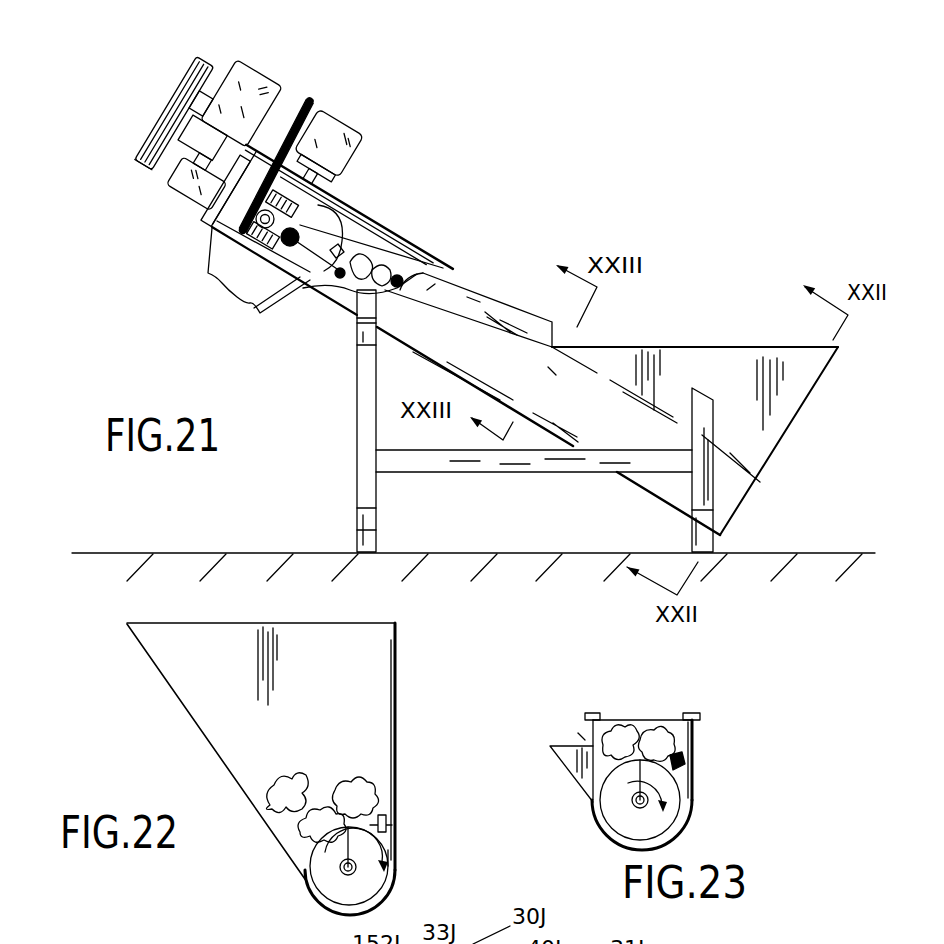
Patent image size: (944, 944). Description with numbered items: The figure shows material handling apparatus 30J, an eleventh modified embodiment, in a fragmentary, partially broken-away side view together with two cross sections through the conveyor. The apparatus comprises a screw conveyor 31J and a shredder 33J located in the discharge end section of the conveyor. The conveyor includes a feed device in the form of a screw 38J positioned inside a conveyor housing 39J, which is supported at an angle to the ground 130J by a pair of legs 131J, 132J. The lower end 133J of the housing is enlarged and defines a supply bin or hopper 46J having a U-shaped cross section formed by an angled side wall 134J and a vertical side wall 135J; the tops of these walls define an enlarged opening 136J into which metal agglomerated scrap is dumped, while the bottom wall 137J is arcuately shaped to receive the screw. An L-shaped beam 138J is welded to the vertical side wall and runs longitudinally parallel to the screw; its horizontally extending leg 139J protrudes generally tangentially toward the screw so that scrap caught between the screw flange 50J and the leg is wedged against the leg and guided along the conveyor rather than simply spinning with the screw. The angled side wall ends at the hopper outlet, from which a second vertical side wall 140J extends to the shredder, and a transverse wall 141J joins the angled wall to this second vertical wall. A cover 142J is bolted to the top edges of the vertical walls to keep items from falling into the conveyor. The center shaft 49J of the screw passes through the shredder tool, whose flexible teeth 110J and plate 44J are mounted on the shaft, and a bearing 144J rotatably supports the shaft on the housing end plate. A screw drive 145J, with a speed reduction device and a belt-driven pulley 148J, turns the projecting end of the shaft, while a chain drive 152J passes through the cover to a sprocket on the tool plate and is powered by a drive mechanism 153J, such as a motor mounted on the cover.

In FIG. 21, the material handling apparatus 30J is at (458, 90).
In FIG. 22, the material handling apparatus 30J is at (424, 644).
In FIG. 23, the material handling apparatus 30J is at (752, 684).
In FIG. 21, the screw conveyor 31J is at (492, 266).
In FIG. 22, the screw conveyor 31J is at (296, 784).
In FIG. 23, the screw conveyor 31J is at (633, 731).
In FIG. 21, the shredder 33J is at (214, 243).
In FIG. 21, the screw 38J is at (380, 293).
In FIG. 22, the screw 38J is at (325, 878).
In FIG. 23, the screw 38J is at (625, 823).
In FIG. 21, the conveyor housing 39J is at (345, 290).
In FIG. 21, the plate 44J is at (257, 275).
In FIG. 21, the hopper 46J is at (698, 345).
In FIG. 22, the hopper 46J is at (400, 729).
In FIG. 22, the center shaft 49J is at (345, 866).
In FIG. 23, the center shaft 49J is at (634, 801).
In FIG. 22, the screw flange 50J is at (358, 899).
In FIG. 23, the screw flange 50J is at (660, 837).
In FIG. 21, the flexible teeth 110J is at (292, 214).
In FIG. 21, the ground 130J is at (198, 552).
In FIG. 21, the leg 131J is at (358, 489).
In FIG. 21, the leg 132J is at (705, 470).
In FIG. 21, the lower end 133J is at (642, 488).
In FIG. 21, the angled side wall 134J is at (600, 363).
In FIG. 22, the angled side wall 134J is at (190, 718).
In FIG. 23, the angled side wall 134J is at (568, 777).
In FIG. 22, the vertical side wall 135J is at (396, 679).
In FIG. 23, the vertical side wall 135J is at (693, 732).
In FIG. 21, the enlarged opening 136J is at (748, 347).
In FIG. 22, the enlarged opening 136J is at (195, 640).
In FIG. 22, the bottom wall 137J is at (327, 912).
In FIG. 21, the L-shaped beam 138J is at (335, 258).
In FIG. 22, the L-shaped beam 138J is at (392, 824).
In FIG. 23, the L-shaped beam 138J is at (688, 755).
In FIG. 22, the horizontally extending leg 139J is at (388, 857).
In FIG. 23, the horizontally extending leg 139J is at (694, 784).
In FIG. 21, the second vertical side wall 140J is at (553, 349).
In FIG. 23, the second vertical side wall 140J is at (593, 732).
In FIG. 21, the transverse wall 141J is at (548, 367).
In FIG. 23, the transverse wall 141J is at (578, 733).
In FIG. 21, the cover 142J is at (428, 290).
In FIG. 23, the cover 142J is at (612, 720).
In FIG. 21, the bearing 144J is at (212, 222).
In FIG. 21, the screw drive 145J is at (186, 197).
In FIG. 21, the belt-driven pulley 148J is at (157, 142).
In FIG. 21, the chain drive 152J is at (310, 97).
In FIG. 21, the drive mechanism 153J is at (342, 110).